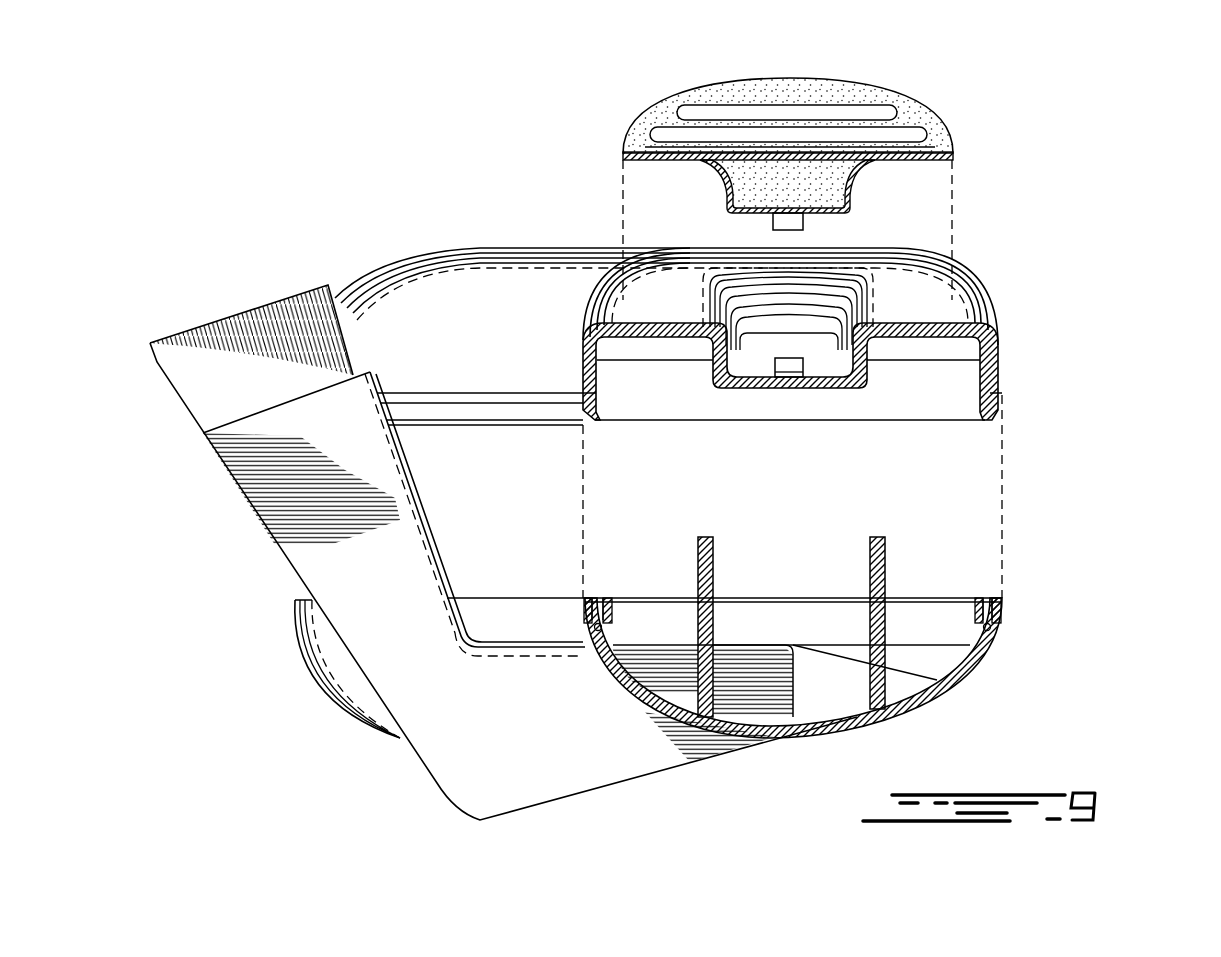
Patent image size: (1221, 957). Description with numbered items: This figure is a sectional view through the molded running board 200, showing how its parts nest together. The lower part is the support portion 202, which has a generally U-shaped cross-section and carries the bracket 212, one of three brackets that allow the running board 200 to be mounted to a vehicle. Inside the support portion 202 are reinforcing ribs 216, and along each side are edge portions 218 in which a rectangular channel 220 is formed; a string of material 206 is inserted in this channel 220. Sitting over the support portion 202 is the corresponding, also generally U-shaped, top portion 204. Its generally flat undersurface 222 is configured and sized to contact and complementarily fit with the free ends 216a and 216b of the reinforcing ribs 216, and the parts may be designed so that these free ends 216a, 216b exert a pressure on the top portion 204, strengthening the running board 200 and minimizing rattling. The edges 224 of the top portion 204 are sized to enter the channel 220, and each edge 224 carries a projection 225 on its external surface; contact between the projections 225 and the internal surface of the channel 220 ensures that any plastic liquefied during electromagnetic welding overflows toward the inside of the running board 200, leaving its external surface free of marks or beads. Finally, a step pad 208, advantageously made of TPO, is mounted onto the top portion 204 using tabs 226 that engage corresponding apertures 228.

The molded running board 200 is at (1100, 181).
The support portion 202 is at (988, 647).
The top portion 204 is at (995, 355).
The string of material 206 is at (600, 630).
The step pad 208 is at (873, 113).
The bracket 212 is at (290, 478).
The reinforcing ribs 216 is at (717, 565).
The free end of reinforcing rib 216a is at (705, 537).
The free end of reinforcing rib 216b is at (877, 537).
The edge portions 218 is at (597, 598).
The rectangular channel 220 is at (593, 597).
The undersurface 222 is at (788, 388).
The edges 224 is at (993, 404).
The projection 225 is at (1003, 393).
The tabs 226 is at (783, 228).
The apertures 228 is at (793, 360).